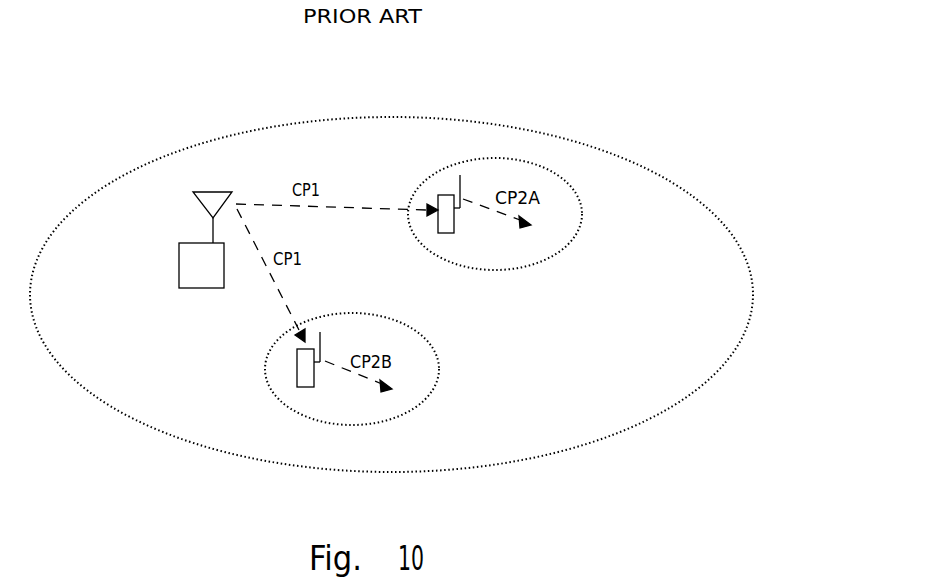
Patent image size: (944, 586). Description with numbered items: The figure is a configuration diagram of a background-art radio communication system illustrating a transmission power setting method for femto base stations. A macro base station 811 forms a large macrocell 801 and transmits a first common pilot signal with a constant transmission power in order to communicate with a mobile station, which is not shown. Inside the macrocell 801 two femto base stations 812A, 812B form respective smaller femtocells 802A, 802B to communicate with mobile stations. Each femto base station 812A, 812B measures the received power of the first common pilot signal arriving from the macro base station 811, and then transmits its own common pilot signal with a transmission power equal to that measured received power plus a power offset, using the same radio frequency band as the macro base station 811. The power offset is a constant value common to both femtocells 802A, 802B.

The macrocell 801 is at (388, 117).
The femtocell 802A is at (582, 230).
The femtocell 802B is at (438, 369).
The macro base station 811 is at (180, 248).
The femto base station 812A is at (440, 197).
The femto base station 812B is at (297, 377).